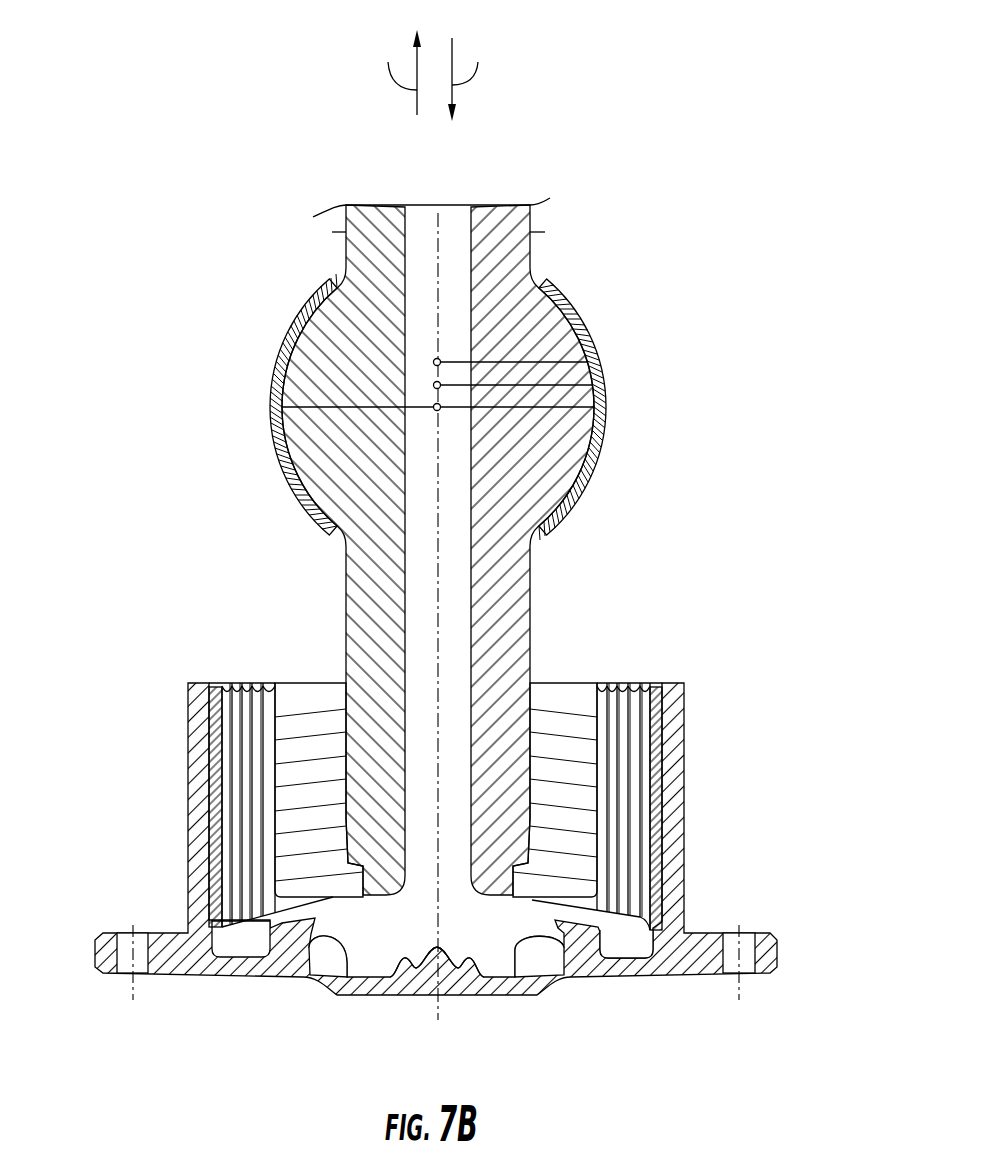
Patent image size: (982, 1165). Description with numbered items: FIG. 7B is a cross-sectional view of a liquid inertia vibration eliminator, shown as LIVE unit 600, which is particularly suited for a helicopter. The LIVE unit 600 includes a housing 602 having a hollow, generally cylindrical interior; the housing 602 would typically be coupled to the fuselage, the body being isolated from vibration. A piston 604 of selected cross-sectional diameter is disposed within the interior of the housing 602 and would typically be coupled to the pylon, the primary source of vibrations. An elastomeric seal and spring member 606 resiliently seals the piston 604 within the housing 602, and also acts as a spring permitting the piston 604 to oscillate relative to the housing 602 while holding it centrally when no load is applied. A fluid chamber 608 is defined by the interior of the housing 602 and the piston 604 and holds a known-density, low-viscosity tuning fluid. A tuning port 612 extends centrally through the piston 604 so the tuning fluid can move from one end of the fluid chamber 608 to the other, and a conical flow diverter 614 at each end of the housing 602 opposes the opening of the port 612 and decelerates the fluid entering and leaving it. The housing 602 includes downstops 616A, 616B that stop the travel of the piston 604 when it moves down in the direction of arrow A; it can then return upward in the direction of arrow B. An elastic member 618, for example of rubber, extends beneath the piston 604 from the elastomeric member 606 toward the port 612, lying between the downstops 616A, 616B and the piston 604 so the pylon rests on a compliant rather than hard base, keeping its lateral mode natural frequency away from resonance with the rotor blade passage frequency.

The LIVE unit 600 is at (656, 115).
The tuning port 612 is at (419, 201).
The piston 604 is at (497, 212).
The elastomeric seal and spring member 606 is at (249, 683).
The housing 602 is at (215, 972).
The fluid chamber 608 is at (633, 946).
The conical flow diverter 614 is at (389, 962).
The downstop 616A is at (348, 978).
The downstop 616B is at (522, 968).
The elastic member 618 is at (333, 900).